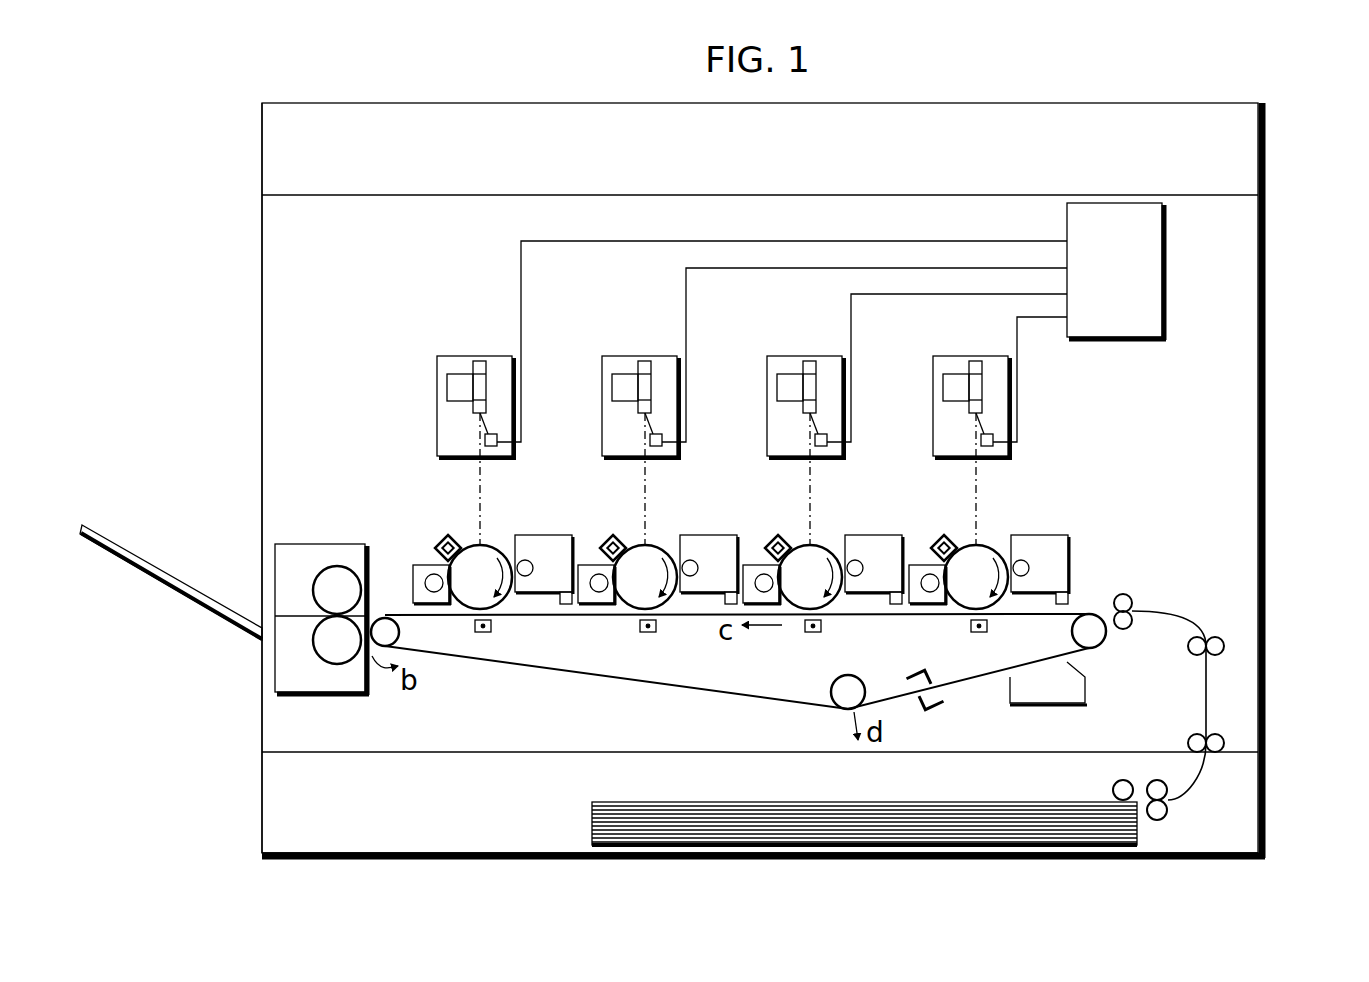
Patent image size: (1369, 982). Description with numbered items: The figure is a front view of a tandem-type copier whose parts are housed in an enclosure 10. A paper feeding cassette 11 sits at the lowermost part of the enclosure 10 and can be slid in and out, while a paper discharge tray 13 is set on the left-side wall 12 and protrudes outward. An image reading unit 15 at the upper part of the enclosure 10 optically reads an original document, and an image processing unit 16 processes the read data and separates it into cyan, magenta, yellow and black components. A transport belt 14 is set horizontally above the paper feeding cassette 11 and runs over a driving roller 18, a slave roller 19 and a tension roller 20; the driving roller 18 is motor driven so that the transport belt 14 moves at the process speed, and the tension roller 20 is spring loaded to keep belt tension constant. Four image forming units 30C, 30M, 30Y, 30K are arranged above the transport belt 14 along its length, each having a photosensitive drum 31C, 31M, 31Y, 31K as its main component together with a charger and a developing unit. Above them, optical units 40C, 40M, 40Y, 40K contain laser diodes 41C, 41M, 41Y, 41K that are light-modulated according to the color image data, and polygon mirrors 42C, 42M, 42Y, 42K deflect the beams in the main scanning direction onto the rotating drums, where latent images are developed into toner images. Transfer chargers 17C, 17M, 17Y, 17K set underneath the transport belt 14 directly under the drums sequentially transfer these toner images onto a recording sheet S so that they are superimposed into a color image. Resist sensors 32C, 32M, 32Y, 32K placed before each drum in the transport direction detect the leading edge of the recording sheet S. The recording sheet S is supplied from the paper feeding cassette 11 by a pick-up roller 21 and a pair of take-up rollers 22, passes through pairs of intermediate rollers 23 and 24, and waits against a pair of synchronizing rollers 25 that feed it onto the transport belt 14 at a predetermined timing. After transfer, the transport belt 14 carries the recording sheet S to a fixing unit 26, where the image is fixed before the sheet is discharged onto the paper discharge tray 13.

The enclosure 10 is at (1270, 154).
The paper feeding cassette 11 is at (868, 856).
The left-side wall 12 is at (262, 443).
The paper discharge tray 13 is at (206, 606).
The transport belt 14 is at (548, 670).
The image reading unit 15 is at (1088, 135).
The image processing unit 16 is at (1162, 280).
The transfer charger 17K is at (473, 632).
The transfer charger 17Y is at (615, 638).
The transfer charger 17M is at (780, 649).
The transfer charger 17C is at (940, 638).
The driving roller 18 is at (382, 618).
The slave roller 19 is at (1098, 640).
The tension roller 20 is at (835, 700).
The pick-up roller 21 is at (1113, 784).
The pair of take-up rollers 22 is at (1172, 806).
The pair of intermediate rollers 23 is at (1224, 742).
The pair of intermediate rollers 24 is at (1224, 645).
The pair of synchronizing rollers 25 is at (1132, 602).
The fixing unit 26 is at (300, 544).
The image forming unit 30K is at (463, 543).
The image forming unit 30Y is at (608, 537).
The image forming unit 30M is at (776, 537).
The image forming unit 30C is at (940, 537).
The photosensitive drum 31K is at (480, 577).
The photosensitive drum 31Y is at (645, 577).
The photosensitive drum 31M is at (810, 577).
The photosensitive drum 31C is at (976, 577).
The resist sensor 32K is at (562, 603).
The resist sensor 32Y is at (694, 598).
The resist sensor 32M is at (861, 603).
The resist sensor 32C is at (1034, 596).
The optical unit 40K is at (468, 352).
The optical unit 40Y is at (641, 417).
The optical unit 40M is at (806, 417).
The optical unit 40C is at (972, 424).
The laser diode 41K is at (495, 456).
The laser diode 41Y is at (858, 387).
The laser diode 41M is at (941, 400).
The laser diode 41C is at (1024, 412).
The polygon mirror 42K is at (484, 364).
The polygon mirror 42Y is at (693, 358).
The polygon mirror 42M is at (861, 358).
The polygon mirror 42C is at (1029, 380).
The recording sheet S is at (978, 803).